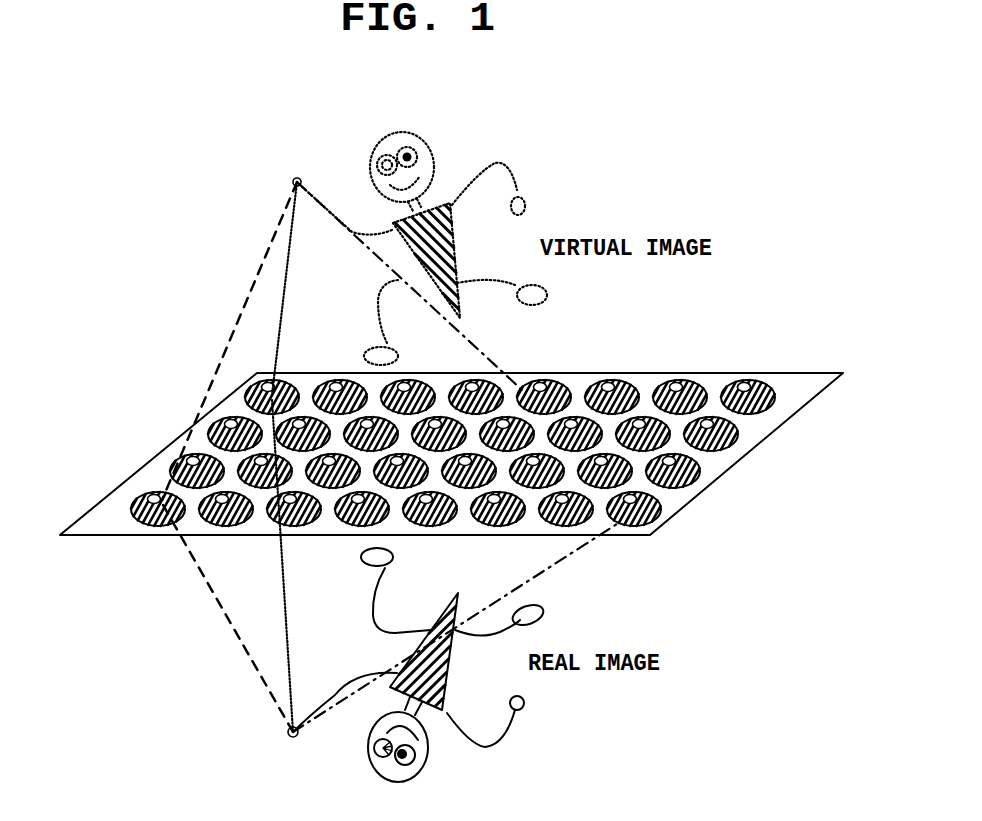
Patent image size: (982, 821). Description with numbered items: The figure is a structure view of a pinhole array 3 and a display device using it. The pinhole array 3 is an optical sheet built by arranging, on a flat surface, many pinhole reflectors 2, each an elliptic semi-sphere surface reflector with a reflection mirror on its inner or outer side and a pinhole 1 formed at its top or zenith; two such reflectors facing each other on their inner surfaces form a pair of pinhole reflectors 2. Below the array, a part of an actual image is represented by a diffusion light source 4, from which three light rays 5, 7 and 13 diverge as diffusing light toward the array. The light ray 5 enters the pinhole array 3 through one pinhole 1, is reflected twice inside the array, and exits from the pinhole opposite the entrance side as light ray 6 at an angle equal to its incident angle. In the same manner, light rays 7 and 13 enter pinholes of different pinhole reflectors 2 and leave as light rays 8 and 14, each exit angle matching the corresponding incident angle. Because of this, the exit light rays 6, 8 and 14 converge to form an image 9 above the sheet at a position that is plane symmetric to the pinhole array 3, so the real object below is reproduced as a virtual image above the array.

The pinhole 1 is at (743, 380).
The pinhole reflector 2 is at (770, 382).
The pinhole array 3 is at (658, 372).
The diffusion light source 4 is at (290, 740).
The light ray 5 is at (228, 618).
The light ray 6 is at (229, 341).
The light ray 7 is at (296, 566).
The light ray 8 is at (276, 288).
The image forming light source 9 is at (299, 174).
The light ray 13 is at (456, 627).
The light ray 14 is at (409, 286).